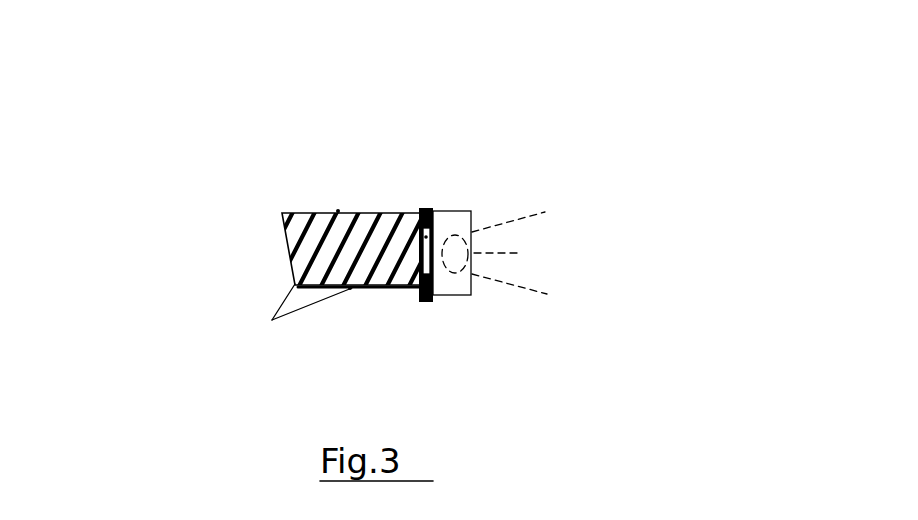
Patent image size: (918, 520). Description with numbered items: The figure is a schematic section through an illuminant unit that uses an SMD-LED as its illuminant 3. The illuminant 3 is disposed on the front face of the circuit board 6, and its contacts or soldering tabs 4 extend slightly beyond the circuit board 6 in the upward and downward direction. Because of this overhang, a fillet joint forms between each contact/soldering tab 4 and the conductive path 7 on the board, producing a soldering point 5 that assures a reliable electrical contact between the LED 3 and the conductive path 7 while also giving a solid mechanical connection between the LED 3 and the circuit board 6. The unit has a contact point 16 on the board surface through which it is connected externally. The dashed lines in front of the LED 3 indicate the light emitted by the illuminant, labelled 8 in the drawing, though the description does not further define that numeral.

The illuminant 3 is at (455, 280).
The contact/soldering tab 4 is at (428, 208).
The soldering point 5 is at (410, 203).
The circuit board 6 is at (300, 240).
The conductive path 7 is at (272, 320).
The light beam 8 is at (523, 252).
The contact point 16 is at (433, 227).